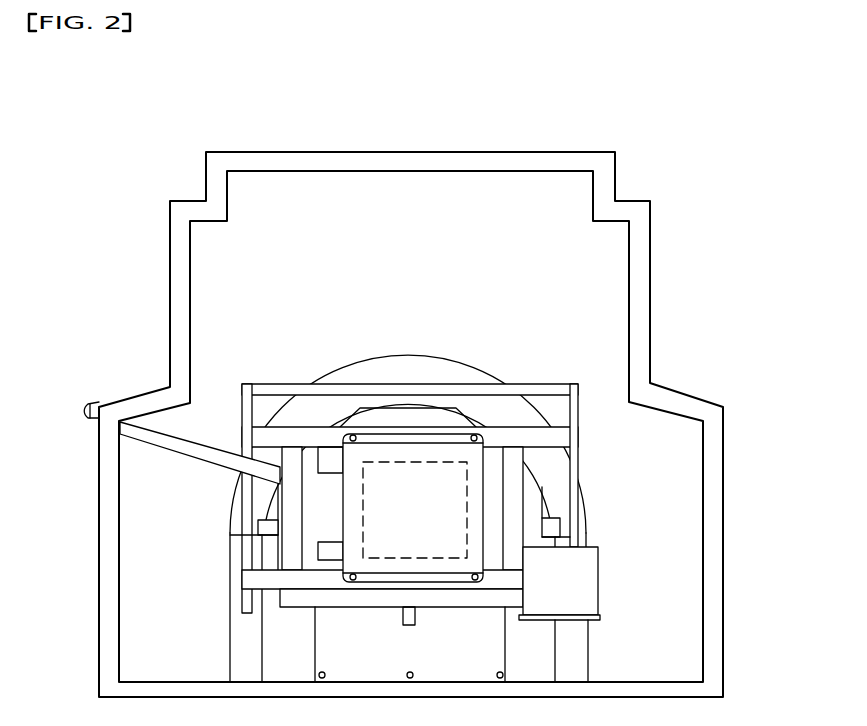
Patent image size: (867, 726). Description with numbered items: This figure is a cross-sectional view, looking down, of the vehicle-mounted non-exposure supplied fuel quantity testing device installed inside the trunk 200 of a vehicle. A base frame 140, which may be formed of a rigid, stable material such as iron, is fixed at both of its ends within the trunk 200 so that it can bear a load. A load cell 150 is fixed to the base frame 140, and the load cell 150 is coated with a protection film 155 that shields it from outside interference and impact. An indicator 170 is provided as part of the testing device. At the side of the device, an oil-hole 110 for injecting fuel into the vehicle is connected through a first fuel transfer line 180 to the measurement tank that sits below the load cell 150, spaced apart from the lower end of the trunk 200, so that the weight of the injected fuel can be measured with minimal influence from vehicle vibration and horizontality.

The trunk 200 is at (523, 148).
The oil-hole 110 is at (88, 405).
The base frame 140 is at (648, 384).
The load cell 150 is at (467, 533).
The protection film 155 is at (487, 472).
The indicator 170 is at (588, 583).
The first fuel transfer line 180 is at (193, 450).